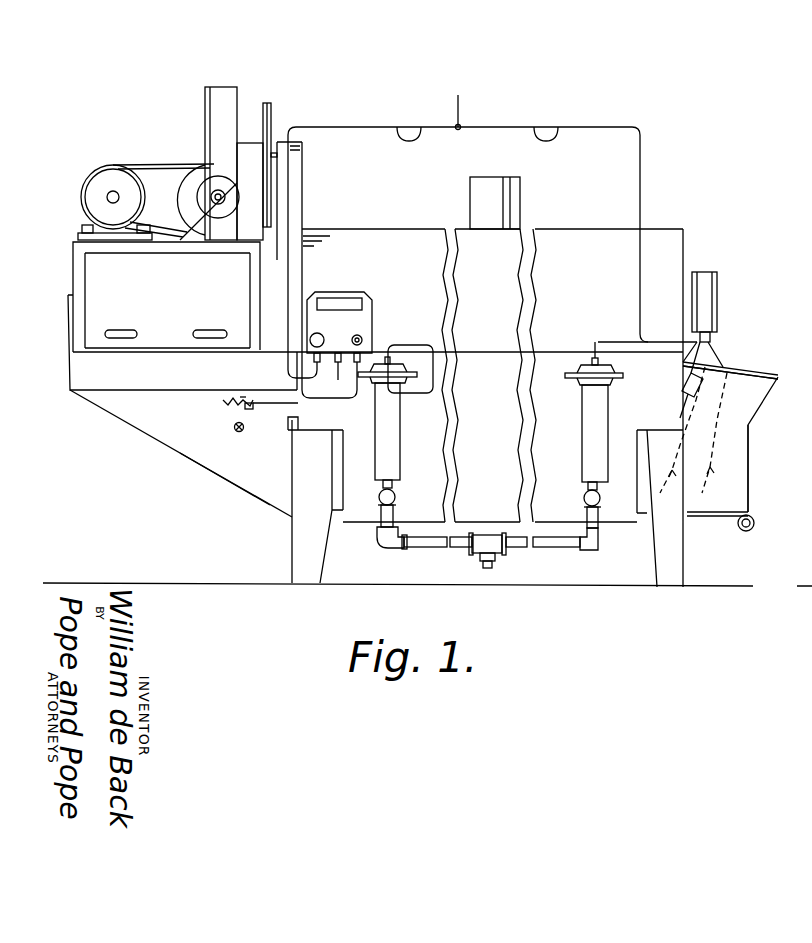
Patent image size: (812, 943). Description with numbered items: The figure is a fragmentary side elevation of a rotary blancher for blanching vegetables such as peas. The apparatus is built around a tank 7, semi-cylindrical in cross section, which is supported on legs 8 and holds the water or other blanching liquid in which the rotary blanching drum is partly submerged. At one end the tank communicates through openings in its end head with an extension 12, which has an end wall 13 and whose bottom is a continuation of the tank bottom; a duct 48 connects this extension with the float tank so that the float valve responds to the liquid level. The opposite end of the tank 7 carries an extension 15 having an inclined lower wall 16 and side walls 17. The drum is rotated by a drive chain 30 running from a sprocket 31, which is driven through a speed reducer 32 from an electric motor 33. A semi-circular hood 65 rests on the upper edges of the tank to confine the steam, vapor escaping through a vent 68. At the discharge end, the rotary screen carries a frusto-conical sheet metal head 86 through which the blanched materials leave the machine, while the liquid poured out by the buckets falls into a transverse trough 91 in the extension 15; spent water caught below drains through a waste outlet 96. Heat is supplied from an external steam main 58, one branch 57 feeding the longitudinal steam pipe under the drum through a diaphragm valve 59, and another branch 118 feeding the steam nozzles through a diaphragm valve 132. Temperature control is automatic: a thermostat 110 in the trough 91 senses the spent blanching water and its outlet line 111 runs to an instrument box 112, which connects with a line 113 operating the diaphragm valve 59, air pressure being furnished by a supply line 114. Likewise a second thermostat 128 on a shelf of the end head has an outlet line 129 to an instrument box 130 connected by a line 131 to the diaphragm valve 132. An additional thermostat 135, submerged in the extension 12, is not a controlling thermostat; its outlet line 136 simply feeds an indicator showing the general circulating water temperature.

The tank 7 is at (538, 483).
The legs 8 is at (318, 563).
The extension of the tank 12 is at (770, 433).
The end wall 13 is at (750, 468).
The extension 15 is at (180, 465).
The inclined lower wall 16 is at (212, 473).
The side walls 17 is at (244, 491).
The drive chain 30 is at (275, 124).
The sprocket 31 is at (268, 103).
The speed reducer 32 is at (223, 89).
The electric motor 33 is at (114, 166).
The duct 48 is at (745, 530).
The branch of steam supply pipe 57 is at (461, 548).
The steam supply pipe 58 is at (487, 574).
The diaphragm valve 59 is at (400, 385).
The hood 65 is at (391, 216).
The vent 68 is at (521, 186).
The sheet metal head 86 is at (70, 378).
The trough 91 is at (224, 402).
The waste outlet 96 is at (237, 432).
The thermostat 110 is at (251, 382).
The outlet line 111 is at (320, 401).
The instrument box 112 is at (357, 284).
The line 113 is at (428, 336).
The supply line 114 is at (474, 145).
The branch 118 is at (556, 544).
The thermostat 128 is at (678, 441).
The outlet line 129 is at (722, 356).
The instrument box 130 is at (703, 272).
The line 131 is at (609, 342).
The diaphragm valve 132 is at (582, 379).
The thermostat 135 is at (719, 437).
The outlet line 136 is at (729, 388).